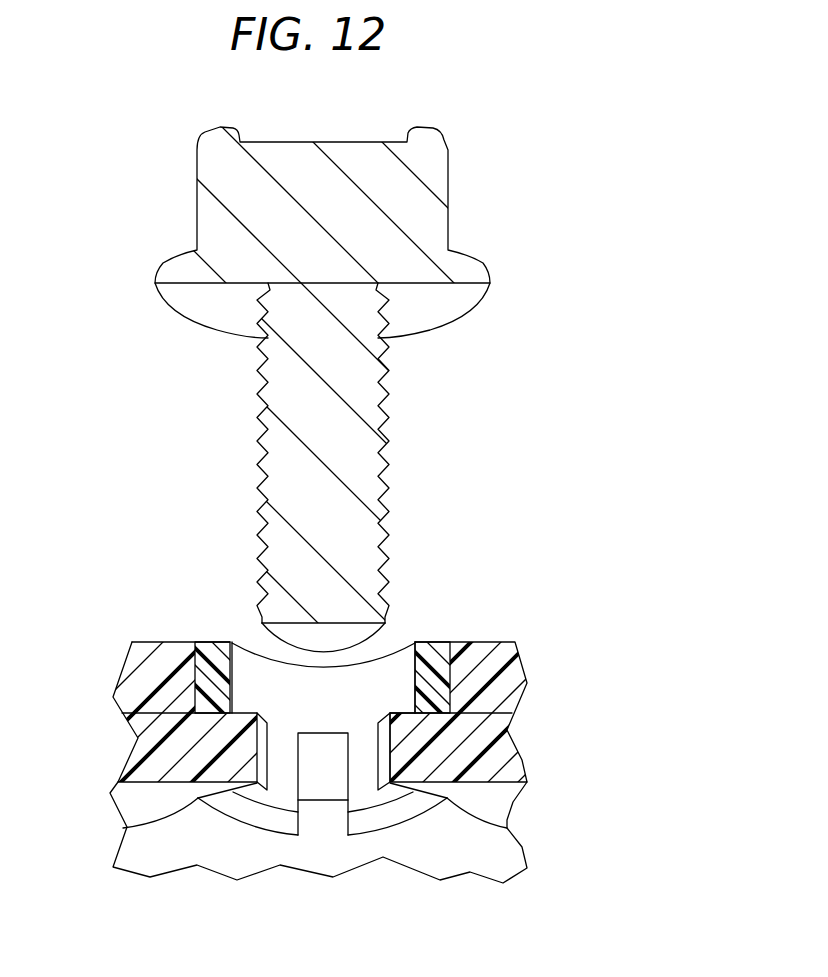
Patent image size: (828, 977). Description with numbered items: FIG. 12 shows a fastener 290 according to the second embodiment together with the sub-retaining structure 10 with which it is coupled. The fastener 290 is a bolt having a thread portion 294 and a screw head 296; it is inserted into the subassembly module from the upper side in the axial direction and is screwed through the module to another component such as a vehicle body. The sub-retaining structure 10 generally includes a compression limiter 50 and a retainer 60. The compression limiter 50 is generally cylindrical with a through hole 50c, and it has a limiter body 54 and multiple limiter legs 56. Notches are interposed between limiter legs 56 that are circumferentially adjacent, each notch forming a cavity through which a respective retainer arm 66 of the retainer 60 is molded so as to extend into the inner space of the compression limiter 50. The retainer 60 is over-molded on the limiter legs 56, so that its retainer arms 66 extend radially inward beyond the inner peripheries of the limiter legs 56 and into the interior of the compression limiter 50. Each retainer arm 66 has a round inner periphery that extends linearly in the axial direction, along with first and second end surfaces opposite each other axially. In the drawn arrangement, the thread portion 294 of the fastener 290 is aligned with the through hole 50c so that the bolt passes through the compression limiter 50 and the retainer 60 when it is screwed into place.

The fastener 290 is at (730, 297).
The screw head 296 is at (448, 172).
The thread portion 294 is at (385, 427).
The sub-retaining structure 10 is at (722, 735).
The compression limiter 50 is at (329, 705).
The through hole 50c is at (257, 678).
The limiter body 54 is at (367, 687).
The limiter legs 56 is at (205, 650).
The retainer 60 is at (507, 812).
The retainer arms 66 is at (123, 828).